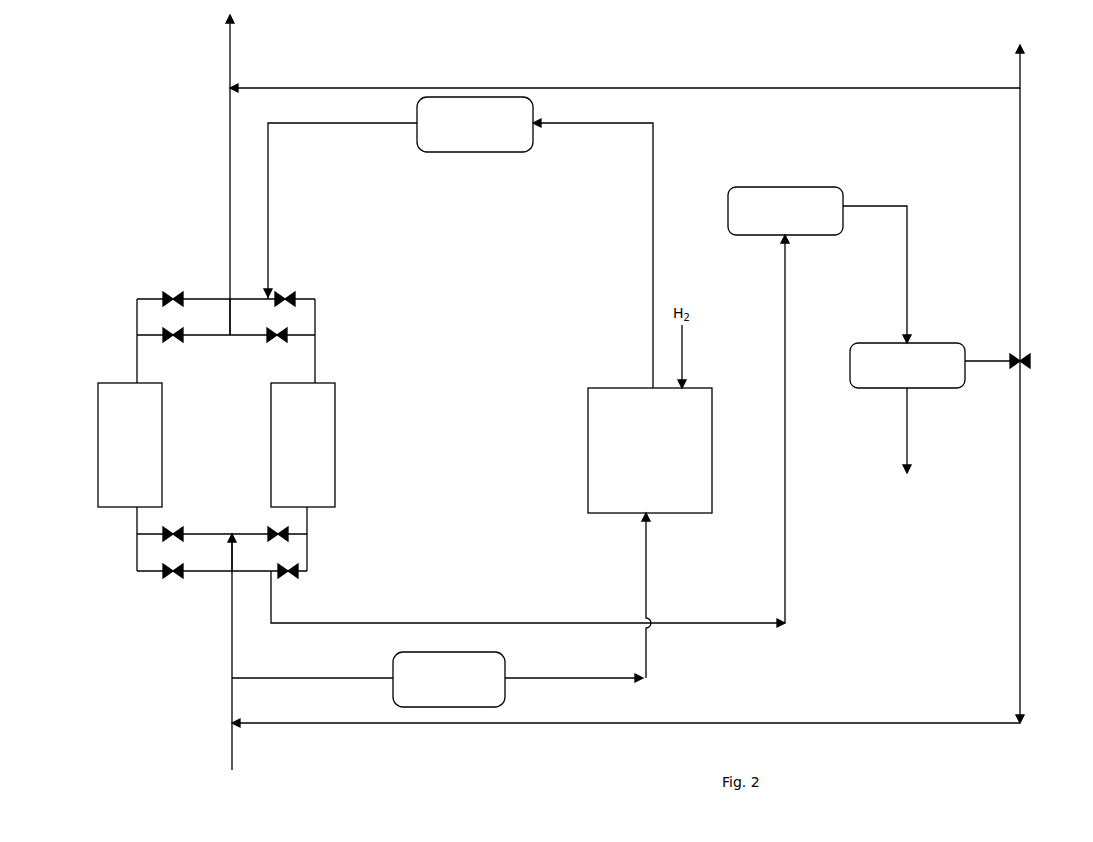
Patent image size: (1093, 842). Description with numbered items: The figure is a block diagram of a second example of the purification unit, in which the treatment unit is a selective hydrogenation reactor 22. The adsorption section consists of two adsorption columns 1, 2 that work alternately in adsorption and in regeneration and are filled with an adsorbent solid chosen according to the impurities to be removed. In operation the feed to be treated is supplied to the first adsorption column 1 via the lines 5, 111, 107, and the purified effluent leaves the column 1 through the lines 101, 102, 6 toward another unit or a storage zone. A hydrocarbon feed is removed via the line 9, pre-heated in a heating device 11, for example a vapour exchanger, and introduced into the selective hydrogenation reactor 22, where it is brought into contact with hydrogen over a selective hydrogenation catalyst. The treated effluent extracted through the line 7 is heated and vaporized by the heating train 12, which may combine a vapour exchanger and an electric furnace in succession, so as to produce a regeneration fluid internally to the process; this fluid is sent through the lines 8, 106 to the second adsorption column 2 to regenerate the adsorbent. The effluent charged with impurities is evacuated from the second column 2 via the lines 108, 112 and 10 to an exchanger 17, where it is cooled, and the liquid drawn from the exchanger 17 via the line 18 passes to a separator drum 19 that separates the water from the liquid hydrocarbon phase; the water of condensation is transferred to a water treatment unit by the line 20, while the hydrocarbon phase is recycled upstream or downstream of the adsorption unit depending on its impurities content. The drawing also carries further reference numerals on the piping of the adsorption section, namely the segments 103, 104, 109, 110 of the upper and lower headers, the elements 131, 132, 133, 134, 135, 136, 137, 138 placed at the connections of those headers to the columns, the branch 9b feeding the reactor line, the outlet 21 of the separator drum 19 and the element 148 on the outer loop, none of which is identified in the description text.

The first adsorption column 1 is at (98, 455).
The second adsorption column 2 is at (270, 405).
The line 5 is at (230, 648).
The line 6 is at (228, 196).
The line 7 is at (650, 263).
The line 8 is at (270, 173).
The line 9 is at (345, 676).
The line 9b is at (558, 676).
The line 10 is at (580, 618).
The heating device 11 is at (490, 707).
The heating train 12 is at (473, 152).
The exchanger 17 is at (785, 187).
The line 18 is at (890, 205).
The separator drum 19 is at (948, 388).
The line 20 is at (906, 420).
The line 21 is at (980, 358).
The selective hydrogenation reactor 22 is at (588, 443).
The line 101 is at (137, 338).
The line 102 is at (205, 340).
The pipe 103 is at (243, 340).
The pipe 104 is at (190, 297).
The line 106 is at (320, 362).
The line 107 is at (137, 545).
The line 108 is at (310, 545).
The pipe 109 is at (203, 530).
The pipe 110 is at (250, 530).
The line 111 is at (210, 575).
The line 112 is at (270, 578).
The valve 131 is at (170, 296).
The valve 132 is at (290, 296).
The valve 133 is at (173, 341).
The valve 134 is at (289, 338).
The valve 135 is at (170, 532).
The valve 136 is at (173, 578).
The valve 137 is at (295, 578).
The valve 138 is at (292, 532).
The valve 148 is at (1025, 357).